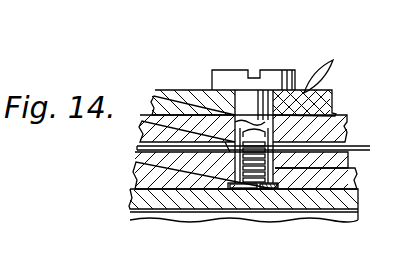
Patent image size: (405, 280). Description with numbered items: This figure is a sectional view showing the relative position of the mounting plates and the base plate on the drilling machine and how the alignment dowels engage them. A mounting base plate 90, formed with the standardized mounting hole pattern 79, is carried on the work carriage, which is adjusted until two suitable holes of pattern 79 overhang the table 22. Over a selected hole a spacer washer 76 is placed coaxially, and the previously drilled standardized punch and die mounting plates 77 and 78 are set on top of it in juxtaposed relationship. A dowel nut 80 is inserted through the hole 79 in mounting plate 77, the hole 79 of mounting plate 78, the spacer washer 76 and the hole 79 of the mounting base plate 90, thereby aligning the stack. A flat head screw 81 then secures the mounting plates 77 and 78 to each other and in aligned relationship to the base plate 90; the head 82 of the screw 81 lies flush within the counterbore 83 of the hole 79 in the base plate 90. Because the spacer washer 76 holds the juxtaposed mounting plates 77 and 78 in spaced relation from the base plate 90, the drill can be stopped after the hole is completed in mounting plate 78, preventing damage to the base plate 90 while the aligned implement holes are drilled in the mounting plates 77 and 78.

The table 22 is at (130, 199).
The spacer washer 76 is at (350, 147).
The punch mounting plate 77 is at (333, 98).
The die mounting plate 78 is at (347, 120).
The standardized mounting hole pattern 79 is at (334, 62).
The dowel nut 80 is at (271, 71).
The flat head screw 81 is at (355, 170).
The screw head 82 is at (256, 189).
The counterbore 83 is at (245, 190).
The mounting base plate 90 is at (133, 158).